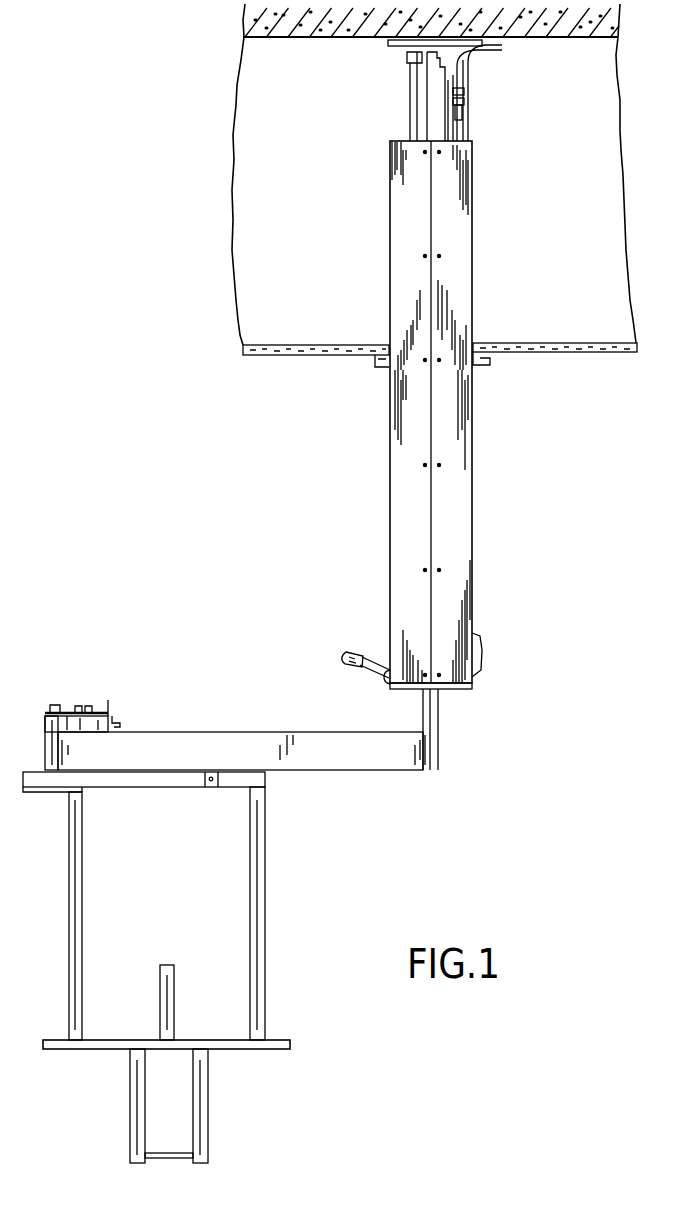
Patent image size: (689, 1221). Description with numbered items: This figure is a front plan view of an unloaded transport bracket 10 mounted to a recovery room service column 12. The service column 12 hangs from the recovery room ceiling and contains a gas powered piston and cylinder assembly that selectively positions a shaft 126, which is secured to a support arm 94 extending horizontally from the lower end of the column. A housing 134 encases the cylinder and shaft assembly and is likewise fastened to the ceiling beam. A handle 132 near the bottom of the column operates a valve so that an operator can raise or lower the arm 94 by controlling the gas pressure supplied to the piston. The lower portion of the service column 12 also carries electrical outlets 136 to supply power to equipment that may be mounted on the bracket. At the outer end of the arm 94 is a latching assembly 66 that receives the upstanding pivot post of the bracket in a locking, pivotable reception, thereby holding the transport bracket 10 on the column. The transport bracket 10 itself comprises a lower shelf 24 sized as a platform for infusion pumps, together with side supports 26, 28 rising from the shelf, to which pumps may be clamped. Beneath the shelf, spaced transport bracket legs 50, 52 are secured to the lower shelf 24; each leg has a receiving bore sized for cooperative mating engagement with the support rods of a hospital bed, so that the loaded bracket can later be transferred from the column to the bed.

The transport bracket 10 is at (306, 1022).
The recovery room service column 12 is at (483, 558).
The lower shelf 24 is at (218, 1043).
The side support 26 is at (74, 868).
The side support 28 is at (257, 886).
The transport bracket leg 50 is at (132, 1085).
The transport bracket leg 52 is at (207, 1097).
The latching assembly 66 is at (87, 698).
The support arm 94 is at (230, 742).
The shaft 126 is at (433, 720).
The handle 132 is at (360, 670).
The housing 134 is at (453, 448).
The electrical outlets 136 is at (485, 656).